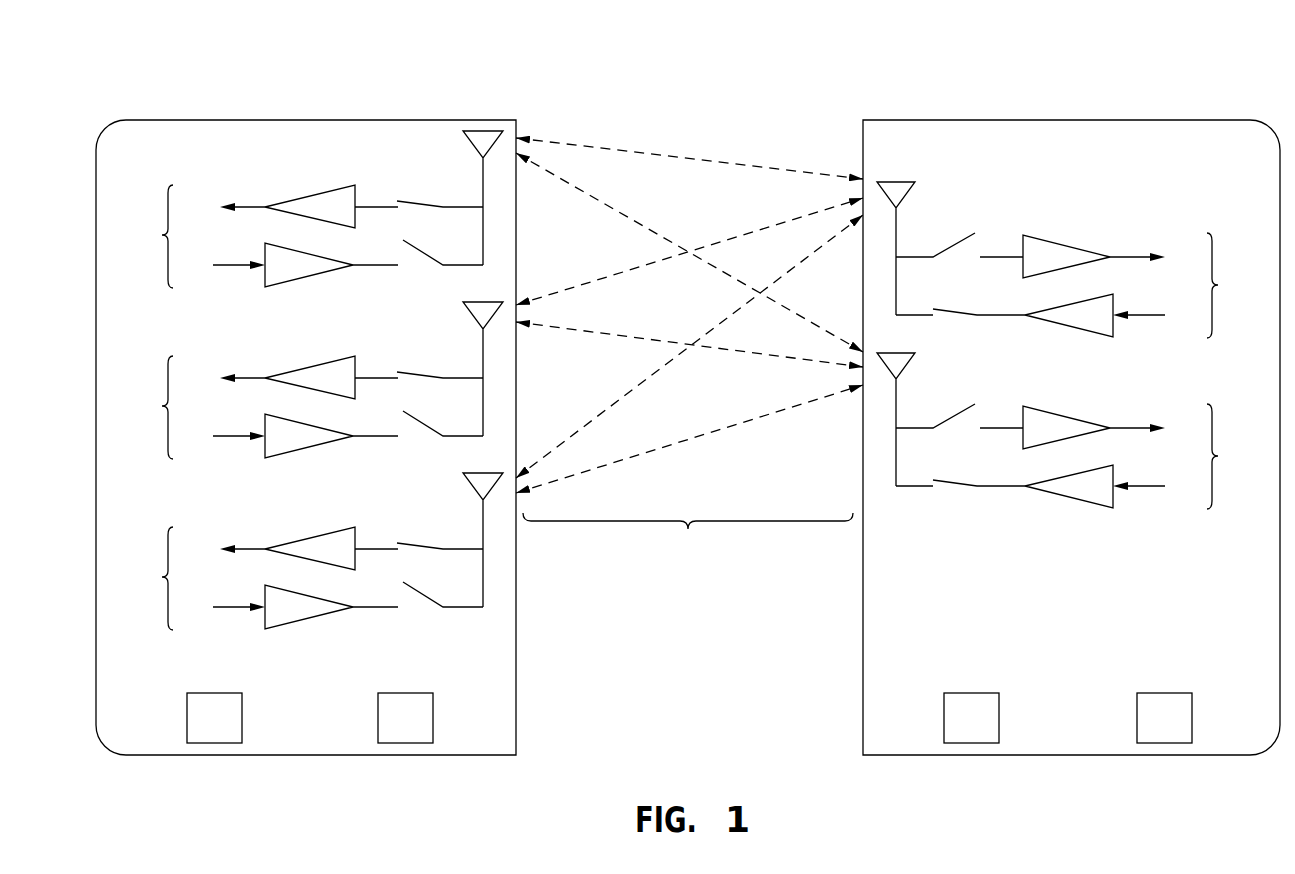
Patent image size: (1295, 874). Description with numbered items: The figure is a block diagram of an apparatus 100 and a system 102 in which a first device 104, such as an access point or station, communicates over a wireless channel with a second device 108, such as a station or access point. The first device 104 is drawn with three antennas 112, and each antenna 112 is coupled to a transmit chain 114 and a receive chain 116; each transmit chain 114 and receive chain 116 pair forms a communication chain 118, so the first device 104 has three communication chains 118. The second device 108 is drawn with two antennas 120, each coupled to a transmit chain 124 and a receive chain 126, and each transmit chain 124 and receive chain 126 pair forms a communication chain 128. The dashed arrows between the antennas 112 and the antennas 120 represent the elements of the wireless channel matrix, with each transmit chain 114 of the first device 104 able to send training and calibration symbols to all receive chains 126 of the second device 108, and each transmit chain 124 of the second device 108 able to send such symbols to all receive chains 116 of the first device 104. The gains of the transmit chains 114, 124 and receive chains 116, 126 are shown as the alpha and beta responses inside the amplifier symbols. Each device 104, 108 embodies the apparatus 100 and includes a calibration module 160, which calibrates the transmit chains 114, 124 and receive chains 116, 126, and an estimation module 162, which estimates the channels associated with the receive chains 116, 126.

The apparatus 100 is at (184, 764).
The system 102 is at (1195, 85).
The first device 104 is at (322, 119).
The second device 108 is at (1055, 119).
The antennas 112 is at (472, 147).
The transmit chains 114 is at (310, 277).
The receive chains 116 is at (311, 195).
The communication chain 118 is at (162, 235).
The antennas 120 is at (906, 196).
The transmit chains 124 is at (1070, 330).
The receive chains 126 is at (1067, 243).
The communication chain 128 is at (1219, 285).
The calibration module 160 is at (214, 693).
The estimation module 162 is at (406, 693).